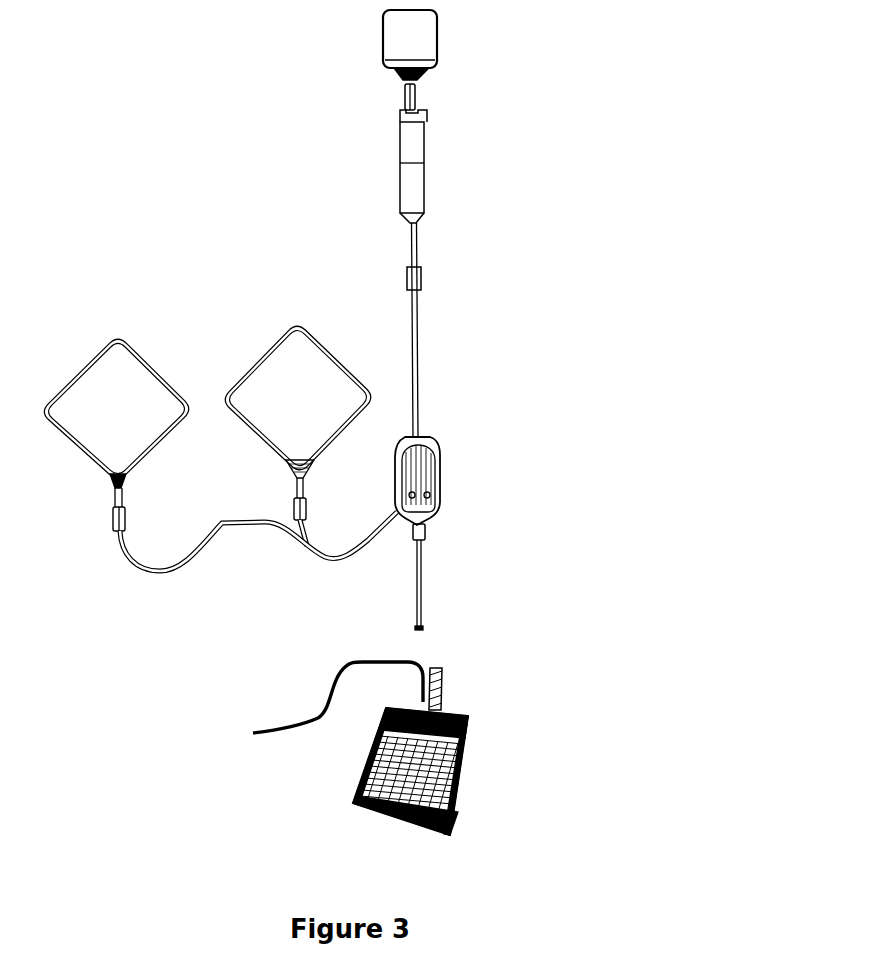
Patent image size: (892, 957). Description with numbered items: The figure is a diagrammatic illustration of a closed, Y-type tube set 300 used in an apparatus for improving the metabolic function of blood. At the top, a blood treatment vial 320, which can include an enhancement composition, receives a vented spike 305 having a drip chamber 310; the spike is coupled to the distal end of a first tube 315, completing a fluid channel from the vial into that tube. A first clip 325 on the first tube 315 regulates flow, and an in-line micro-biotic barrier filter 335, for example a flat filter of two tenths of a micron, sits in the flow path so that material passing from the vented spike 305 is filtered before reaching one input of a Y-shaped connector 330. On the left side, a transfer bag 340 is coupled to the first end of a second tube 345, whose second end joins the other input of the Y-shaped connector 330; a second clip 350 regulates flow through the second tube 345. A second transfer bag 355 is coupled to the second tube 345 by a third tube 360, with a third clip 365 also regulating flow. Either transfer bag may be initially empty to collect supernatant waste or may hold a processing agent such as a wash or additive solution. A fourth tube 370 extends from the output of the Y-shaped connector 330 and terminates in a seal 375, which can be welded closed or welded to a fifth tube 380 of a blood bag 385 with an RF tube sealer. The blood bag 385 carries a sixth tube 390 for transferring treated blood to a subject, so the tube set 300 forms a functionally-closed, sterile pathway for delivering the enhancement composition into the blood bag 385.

The Y-type tube set 300 is at (298, 122).
The blood treatment vial 320 is at (424, 35).
The vented spike 305 is at (415, 94).
The drip chamber 310 is at (420, 141).
The first tube 315 is at (419, 353).
The first clip 325 is at (421, 280).
The in-line micro-biotic barrier filter 335 is at (441, 453).
The Y-shaped connector 330 is at (426, 541).
The fourth tube 370 is at (421, 611).
The seal 375 is at (421, 628).
The second transfer bag 355 is at (100, 357).
The transfer bag 340 is at (280, 345).
The third clip 365 is at (115, 524).
The second clip 350 is at (300, 509).
The third tube 360 is at (168, 576).
The second tube 345 is at (363, 553).
The sixth tube 390 is at (300, 722).
The fifth tube 380 is at (441, 672).
The blood bag 385 is at (466, 721).